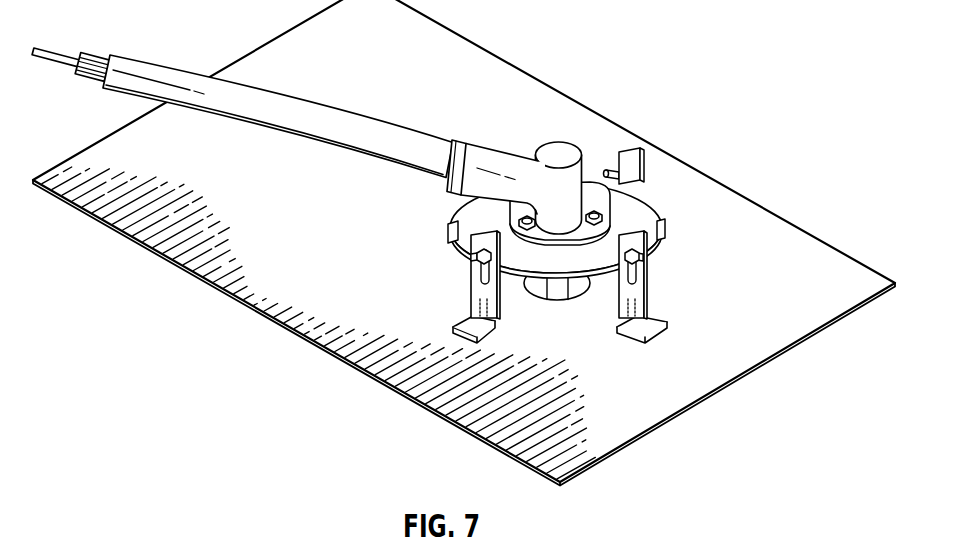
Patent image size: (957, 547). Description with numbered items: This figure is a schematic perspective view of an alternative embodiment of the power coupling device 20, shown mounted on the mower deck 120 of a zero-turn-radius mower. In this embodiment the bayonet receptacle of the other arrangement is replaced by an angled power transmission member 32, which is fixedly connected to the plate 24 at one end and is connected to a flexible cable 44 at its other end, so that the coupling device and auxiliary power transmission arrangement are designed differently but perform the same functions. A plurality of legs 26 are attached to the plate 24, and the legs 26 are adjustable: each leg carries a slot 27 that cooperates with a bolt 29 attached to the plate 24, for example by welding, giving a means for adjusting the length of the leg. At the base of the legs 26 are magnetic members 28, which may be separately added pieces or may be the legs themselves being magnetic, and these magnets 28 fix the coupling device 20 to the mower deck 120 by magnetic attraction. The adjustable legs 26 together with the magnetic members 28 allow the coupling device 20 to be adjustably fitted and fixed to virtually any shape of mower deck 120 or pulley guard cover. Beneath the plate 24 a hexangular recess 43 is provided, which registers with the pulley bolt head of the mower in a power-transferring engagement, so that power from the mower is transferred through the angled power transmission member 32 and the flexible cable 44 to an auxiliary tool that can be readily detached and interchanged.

The power coupling device 20 is at (677, 238).
The plate 24 is at (639, 203).
The legs 26 is at (446, 287).
The slots 27 is at (634, 272).
The magnets 28 is at (455, 326).
The bolts 29 is at (471, 297).
The angled power transmission member 32 is at (572, 143).
The hexangular recess 43 is at (568, 283).
The flexible cable 44 is at (391, 124).
The mower deck 120 is at (790, 243).